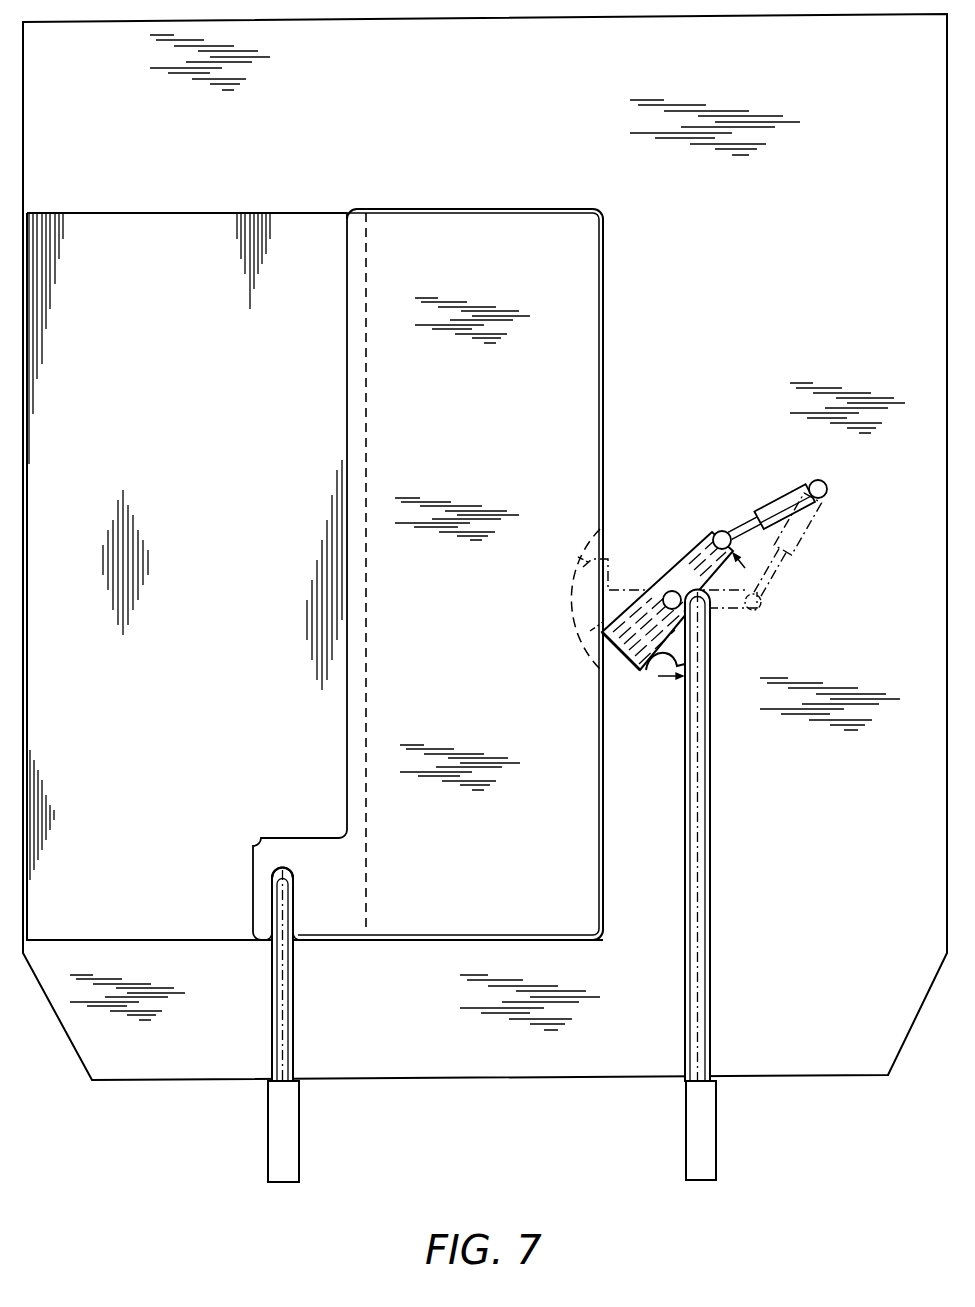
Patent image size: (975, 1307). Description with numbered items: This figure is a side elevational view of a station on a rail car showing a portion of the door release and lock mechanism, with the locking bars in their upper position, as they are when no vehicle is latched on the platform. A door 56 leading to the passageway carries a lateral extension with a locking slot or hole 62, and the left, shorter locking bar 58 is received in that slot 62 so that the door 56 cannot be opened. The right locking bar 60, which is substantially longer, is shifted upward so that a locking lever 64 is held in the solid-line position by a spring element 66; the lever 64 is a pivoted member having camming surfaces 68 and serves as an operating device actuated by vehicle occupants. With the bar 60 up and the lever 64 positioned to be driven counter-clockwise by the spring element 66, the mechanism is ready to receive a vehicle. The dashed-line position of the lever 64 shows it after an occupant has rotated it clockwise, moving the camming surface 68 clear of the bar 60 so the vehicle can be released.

The door 56 is at (346, 407).
The locking bar 58 is at (286, 990).
The locking bar 60 is at (700, 851).
The locking slot or hole 62 is at (278, 868).
The locking lever 64 is at (647, 614).
The spring element 66 is at (776, 506).
The camming surface 68 is at (648, 668).